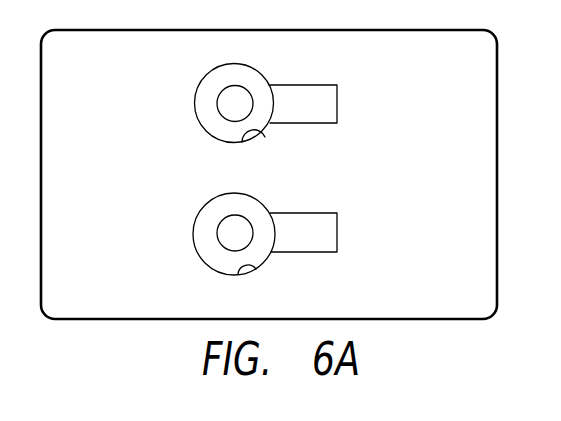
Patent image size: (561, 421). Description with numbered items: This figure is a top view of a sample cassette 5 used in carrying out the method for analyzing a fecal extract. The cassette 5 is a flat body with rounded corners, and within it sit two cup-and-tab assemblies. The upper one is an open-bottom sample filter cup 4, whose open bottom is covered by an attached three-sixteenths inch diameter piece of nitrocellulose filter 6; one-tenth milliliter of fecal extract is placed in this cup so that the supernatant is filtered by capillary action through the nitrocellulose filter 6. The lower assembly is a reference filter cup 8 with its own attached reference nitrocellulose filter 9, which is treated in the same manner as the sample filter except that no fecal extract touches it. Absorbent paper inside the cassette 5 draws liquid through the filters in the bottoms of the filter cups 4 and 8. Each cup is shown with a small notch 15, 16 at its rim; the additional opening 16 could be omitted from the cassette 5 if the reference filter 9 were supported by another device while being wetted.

The sample filter cup 4 is at (297, 86).
The sample cassette 5 is at (402, 320).
The nitrocellulose filter 6 is at (237, 103).
The reference filter cup 8 is at (267, 257).
The reference nitrocellulose filter 9 is at (235, 233).
The notch in upper ring 15 is at (262, 133).
The additional opening 16 is at (252, 267).